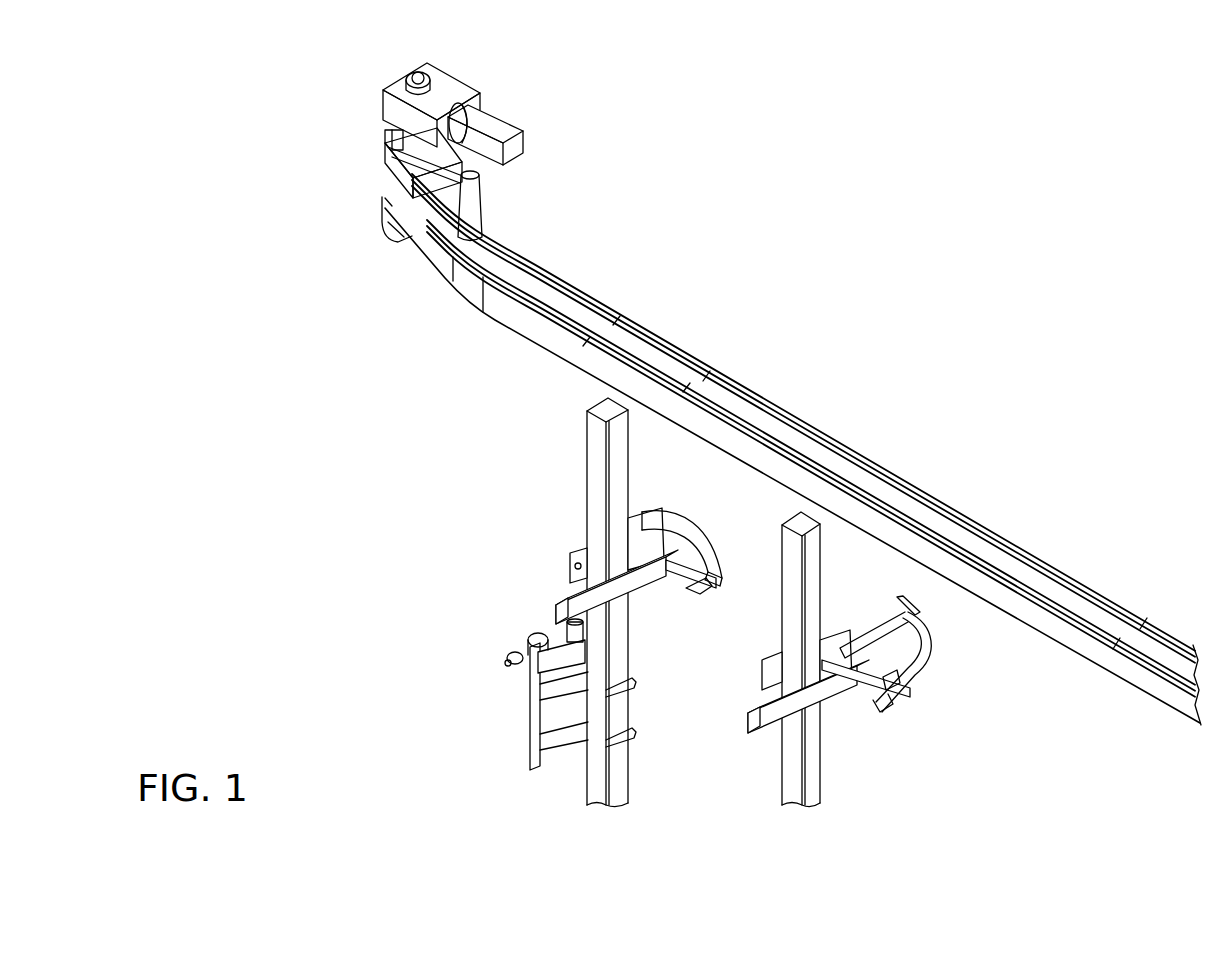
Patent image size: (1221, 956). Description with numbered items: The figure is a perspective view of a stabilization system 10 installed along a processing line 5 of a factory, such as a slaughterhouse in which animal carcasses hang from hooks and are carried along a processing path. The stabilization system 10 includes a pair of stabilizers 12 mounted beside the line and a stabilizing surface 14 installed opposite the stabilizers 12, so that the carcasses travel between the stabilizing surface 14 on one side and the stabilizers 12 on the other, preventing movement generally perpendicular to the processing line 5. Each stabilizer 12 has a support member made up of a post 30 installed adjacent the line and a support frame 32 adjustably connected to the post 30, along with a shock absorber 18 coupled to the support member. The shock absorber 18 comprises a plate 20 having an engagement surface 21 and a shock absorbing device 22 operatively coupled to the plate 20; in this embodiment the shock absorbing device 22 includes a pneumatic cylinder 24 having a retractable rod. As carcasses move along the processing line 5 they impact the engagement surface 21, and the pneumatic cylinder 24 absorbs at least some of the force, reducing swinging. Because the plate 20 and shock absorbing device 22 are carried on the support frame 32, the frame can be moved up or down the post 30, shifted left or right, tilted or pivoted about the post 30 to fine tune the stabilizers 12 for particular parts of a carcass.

The processing line 5 is at (480, 353).
The stabilization system 10 is at (282, 361).
The stabilizer 12 is at (535, 525).
The stabilizing surface 14 is at (915, 536).
The shock absorber 18 is at (663, 608).
The plate 20 is at (918, 613).
The engagement surface 21 is at (715, 522).
The shock absorbing device 22 is at (887, 630).
The pneumatic cylinder 24 is at (887, 630).
The post 30 is at (818, 765).
The support frame 32 is at (850, 677).